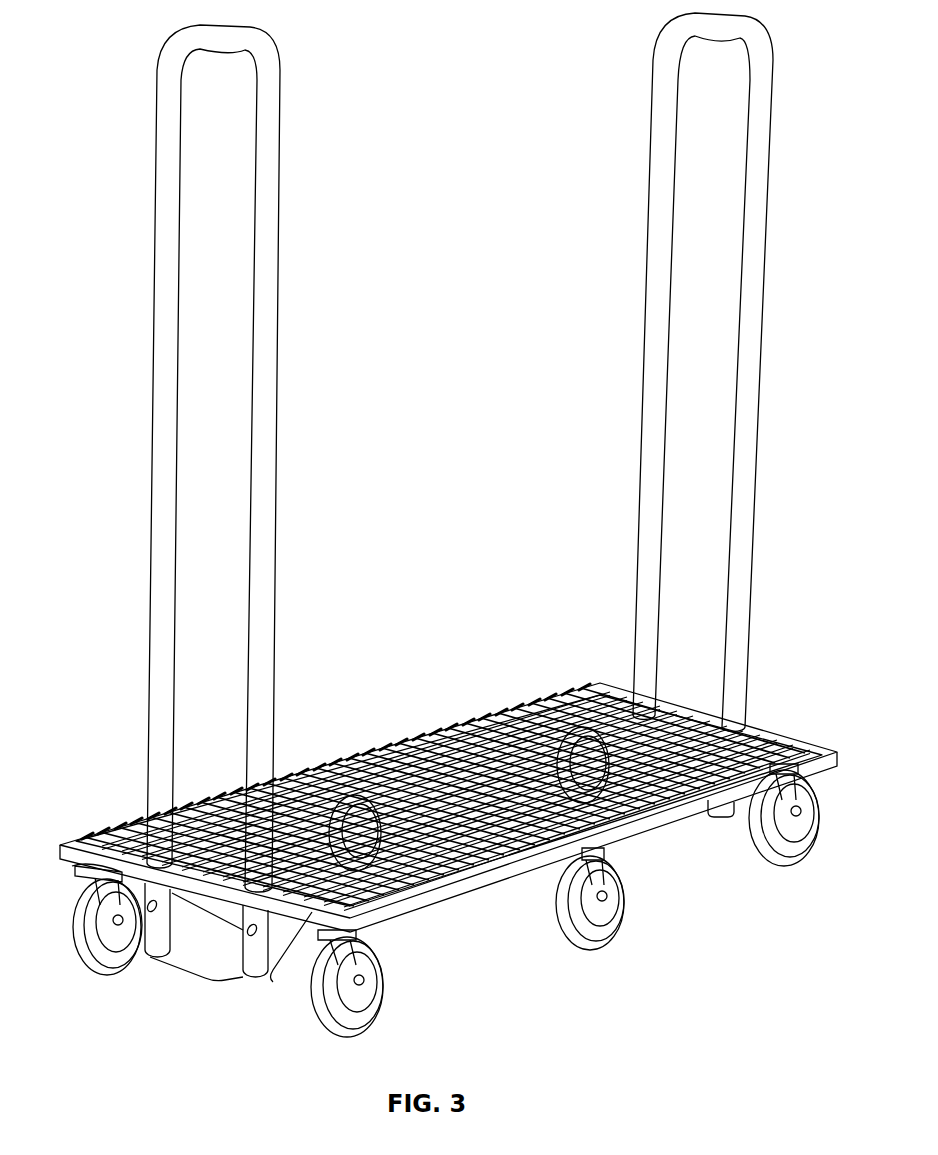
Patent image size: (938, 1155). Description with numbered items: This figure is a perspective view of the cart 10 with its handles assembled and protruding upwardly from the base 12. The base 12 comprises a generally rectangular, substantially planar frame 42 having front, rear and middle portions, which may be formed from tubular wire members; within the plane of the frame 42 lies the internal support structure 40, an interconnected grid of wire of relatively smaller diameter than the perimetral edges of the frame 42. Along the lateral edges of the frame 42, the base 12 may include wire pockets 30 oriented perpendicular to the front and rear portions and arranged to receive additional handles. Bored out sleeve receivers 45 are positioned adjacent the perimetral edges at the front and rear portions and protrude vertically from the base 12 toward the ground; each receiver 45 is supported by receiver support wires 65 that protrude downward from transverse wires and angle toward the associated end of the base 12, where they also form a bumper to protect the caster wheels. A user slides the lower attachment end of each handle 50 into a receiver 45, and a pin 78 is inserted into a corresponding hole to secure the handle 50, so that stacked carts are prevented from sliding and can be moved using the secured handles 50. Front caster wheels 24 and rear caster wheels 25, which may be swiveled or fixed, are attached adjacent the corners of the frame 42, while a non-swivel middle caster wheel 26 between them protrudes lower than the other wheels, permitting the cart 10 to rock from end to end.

The cart 10 is at (121, 166).
The base 12 is at (661, 850).
The front caster wheel 24 is at (794, 871).
The rear caster wheel 25 is at (86, 965).
The middle caster wheel 26 is at (610, 945).
The wire pocket 30 is at (505, 733).
The internal support structure 40 is at (424, 748).
The frame 42 is at (830, 748).
The sleeve receiver 45 is at (605, 708).
The handle 50 is at (283, 483).
The receiver support wire 65 is at (289, 958).
The pin 78 is at (248, 928).